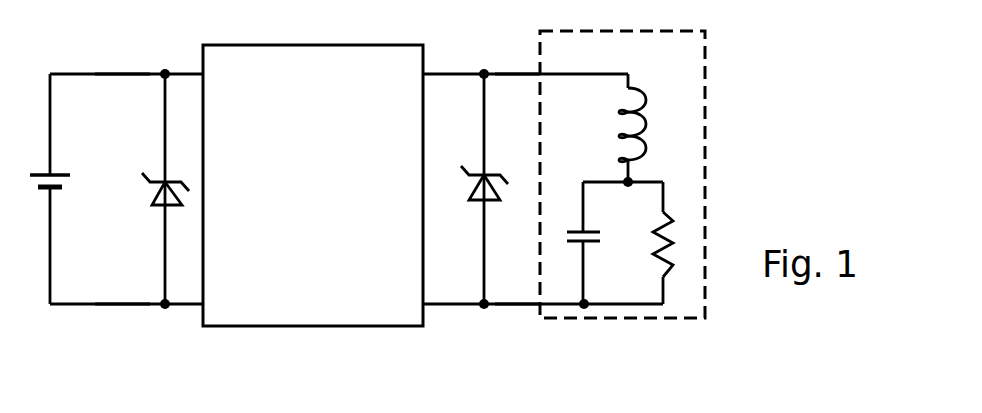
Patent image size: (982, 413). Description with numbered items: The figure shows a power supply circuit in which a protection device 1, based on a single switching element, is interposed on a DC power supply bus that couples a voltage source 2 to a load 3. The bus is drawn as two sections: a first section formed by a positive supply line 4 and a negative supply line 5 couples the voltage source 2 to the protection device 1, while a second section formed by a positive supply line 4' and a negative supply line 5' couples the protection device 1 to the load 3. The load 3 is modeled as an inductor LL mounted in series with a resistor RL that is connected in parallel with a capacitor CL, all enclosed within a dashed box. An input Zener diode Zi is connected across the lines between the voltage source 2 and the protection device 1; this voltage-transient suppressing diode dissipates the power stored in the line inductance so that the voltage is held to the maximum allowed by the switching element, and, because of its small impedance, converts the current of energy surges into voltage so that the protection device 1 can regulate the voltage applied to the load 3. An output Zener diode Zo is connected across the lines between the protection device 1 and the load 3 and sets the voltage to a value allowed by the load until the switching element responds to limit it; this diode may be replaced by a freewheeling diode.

The protection device 1 is at (424, 328).
The voltage source 2 is at (56, 189).
The load 3 is at (622, 203).
The positive supply line 4 is at (122, 52).
The negative supply line 5 is at (122, 330).
The positive supply line 4' is at (508, 52).
The negative supply line 5' is at (503, 330).
The input Zener diode Zi is at (160, 205).
The output Zener diode Zo is at (481, 203).
The inductor LL is at (618, 110).
The capacitor CL is at (580, 242).
The resistor RL is at (639, 248).